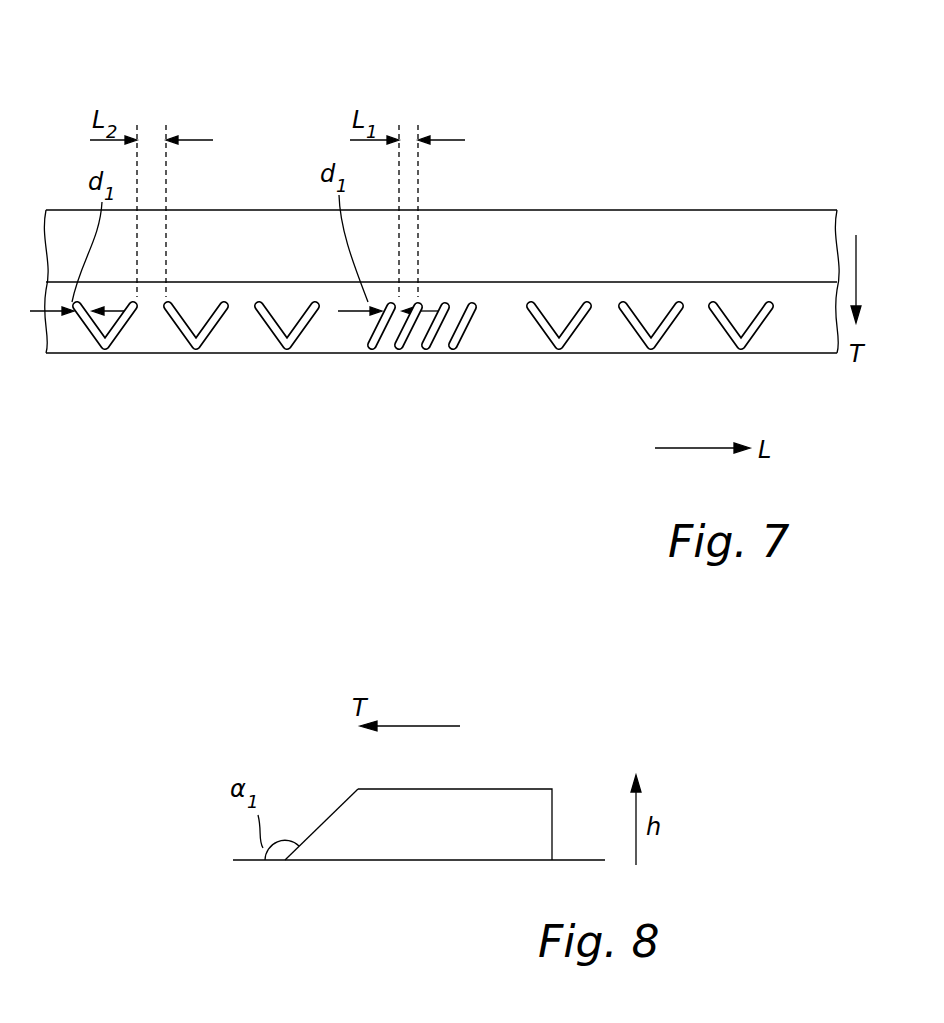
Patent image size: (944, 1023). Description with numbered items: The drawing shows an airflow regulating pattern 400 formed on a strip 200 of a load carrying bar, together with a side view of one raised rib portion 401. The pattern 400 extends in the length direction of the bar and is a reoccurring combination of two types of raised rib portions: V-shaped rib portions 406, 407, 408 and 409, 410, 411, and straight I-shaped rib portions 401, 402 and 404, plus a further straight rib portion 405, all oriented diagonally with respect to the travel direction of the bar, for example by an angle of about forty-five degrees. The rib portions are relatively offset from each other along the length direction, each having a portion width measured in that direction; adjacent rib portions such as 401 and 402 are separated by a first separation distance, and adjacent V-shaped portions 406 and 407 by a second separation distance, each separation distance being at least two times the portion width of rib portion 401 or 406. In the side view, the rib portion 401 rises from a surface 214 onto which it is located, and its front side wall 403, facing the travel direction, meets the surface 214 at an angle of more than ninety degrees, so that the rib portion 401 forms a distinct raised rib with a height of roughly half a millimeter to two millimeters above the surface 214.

In FIG. 7, the web / substrate 200 is at (768, 210).
In FIG. 7, the airflow pattern 400 is at (66, 388).
In FIG. 7, the raised rib portion 401 is at (368, 350).
In FIG. 8, the raised rib portion 401 is at (530, 789).
In FIG. 7, the raised rib portion 402 is at (395, 350).
In FIG. 8, the side wall 403 is at (345, 797).
In FIG. 7, the raised rib portion 404 is at (422, 350).
In FIG. 7, the protrusion 405 is at (479, 302).
In FIG. 7, the raised rib portion 406 is at (105, 353).
In FIG. 7, the raised rib portion 407 is at (196, 353).
In FIG. 7, the raised rib portion 408 is at (287, 353).
In FIG. 7, the raised rib portion 409 is at (560, 353).
In FIG. 7, the raised rib portion 410 is at (651, 353).
In FIG. 7, the raised rib portion 411 is at (741, 353).
In FIG. 8, the surface 214 is at (588, 860).